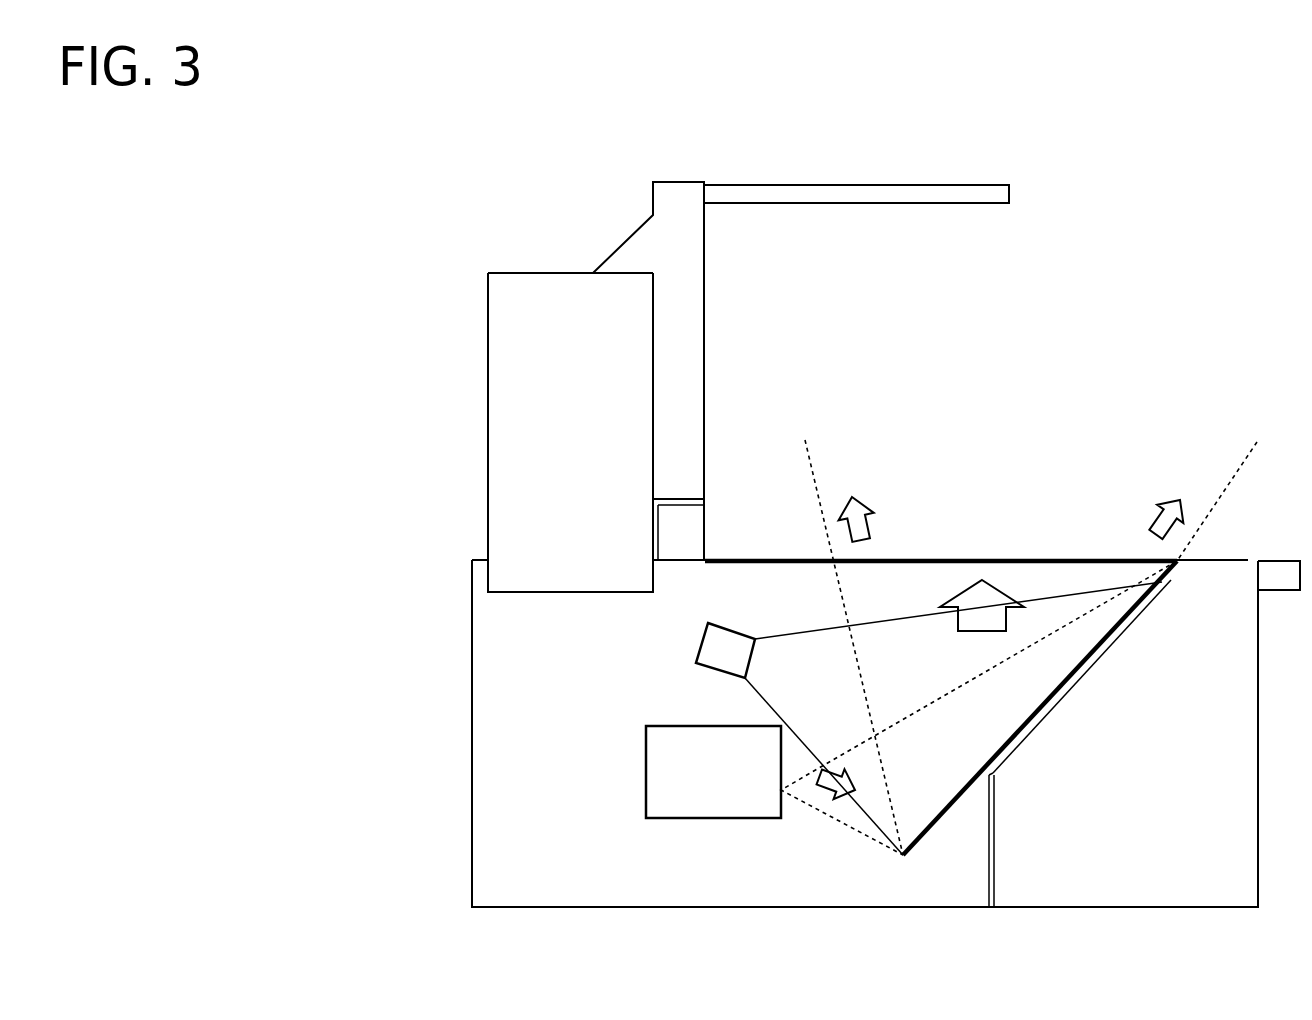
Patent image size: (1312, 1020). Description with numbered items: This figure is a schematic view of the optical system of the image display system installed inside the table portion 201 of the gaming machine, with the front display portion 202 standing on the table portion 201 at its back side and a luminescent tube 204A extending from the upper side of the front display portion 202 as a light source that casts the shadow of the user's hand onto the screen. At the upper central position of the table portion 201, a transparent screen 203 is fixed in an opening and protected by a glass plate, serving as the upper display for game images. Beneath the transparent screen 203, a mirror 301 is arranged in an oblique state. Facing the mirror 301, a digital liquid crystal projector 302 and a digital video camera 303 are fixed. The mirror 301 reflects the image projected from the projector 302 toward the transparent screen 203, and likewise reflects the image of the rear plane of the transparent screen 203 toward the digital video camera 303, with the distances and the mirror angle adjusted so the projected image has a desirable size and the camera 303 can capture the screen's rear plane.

The table portion 201 is at (472, 778).
The front display portion 202 is at (540, 273).
The transparent screen 203 is at (988, 558).
The luminescent tube 204A is at (1010, 192).
The mirror 301 is at (942, 818).
The digital liquid crystal projector (DLP) 302 is at (710, 818).
The digital video camera 303 is at (705, 640).